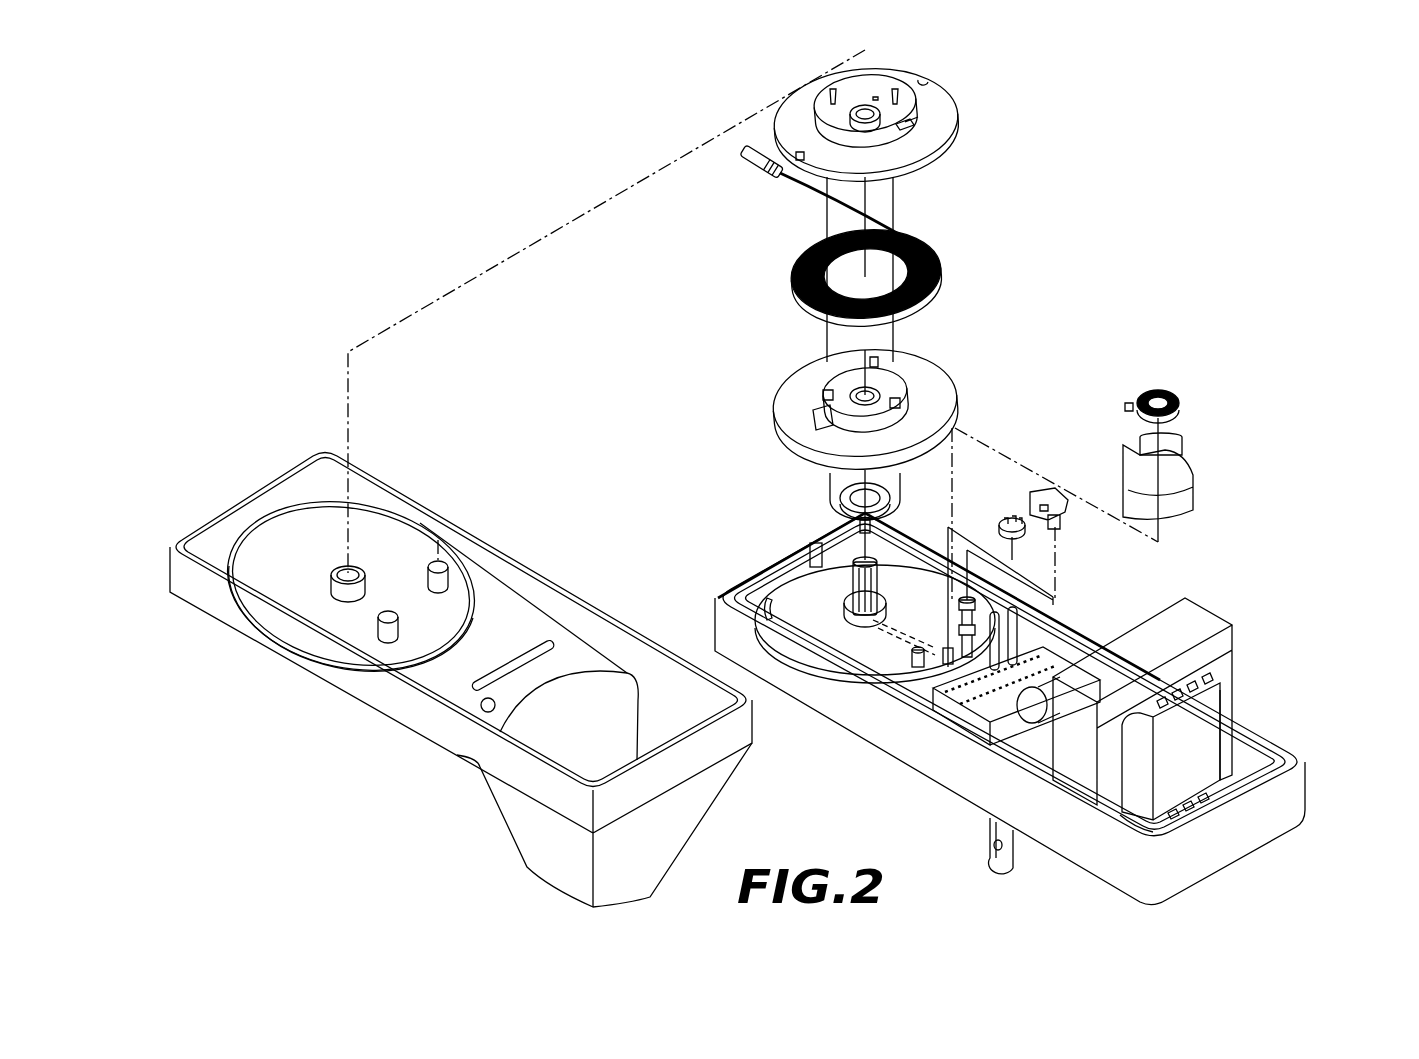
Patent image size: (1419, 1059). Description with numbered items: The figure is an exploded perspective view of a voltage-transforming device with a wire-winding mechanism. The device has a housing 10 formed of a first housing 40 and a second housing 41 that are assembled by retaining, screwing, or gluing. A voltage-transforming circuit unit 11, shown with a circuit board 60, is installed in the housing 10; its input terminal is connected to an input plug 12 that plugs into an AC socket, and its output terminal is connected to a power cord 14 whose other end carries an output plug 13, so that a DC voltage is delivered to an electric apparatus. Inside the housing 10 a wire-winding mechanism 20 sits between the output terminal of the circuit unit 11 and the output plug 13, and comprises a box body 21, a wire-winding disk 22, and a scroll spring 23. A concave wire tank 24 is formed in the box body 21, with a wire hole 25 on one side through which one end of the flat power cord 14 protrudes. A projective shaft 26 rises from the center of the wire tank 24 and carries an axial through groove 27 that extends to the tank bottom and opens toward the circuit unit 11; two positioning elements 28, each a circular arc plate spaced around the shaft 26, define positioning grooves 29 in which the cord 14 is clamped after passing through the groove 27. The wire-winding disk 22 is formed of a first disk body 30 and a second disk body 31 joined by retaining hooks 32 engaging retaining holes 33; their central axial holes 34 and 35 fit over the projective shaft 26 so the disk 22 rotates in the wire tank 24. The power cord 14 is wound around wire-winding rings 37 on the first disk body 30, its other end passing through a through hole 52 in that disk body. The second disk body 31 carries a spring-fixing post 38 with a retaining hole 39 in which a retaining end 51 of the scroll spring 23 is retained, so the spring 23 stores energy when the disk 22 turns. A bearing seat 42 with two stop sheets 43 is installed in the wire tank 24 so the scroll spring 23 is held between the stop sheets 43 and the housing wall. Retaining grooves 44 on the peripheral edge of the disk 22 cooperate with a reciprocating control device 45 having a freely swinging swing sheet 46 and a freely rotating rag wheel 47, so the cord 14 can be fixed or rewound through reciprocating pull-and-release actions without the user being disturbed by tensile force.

The housing 10 is at (1029, 693).
The voltage-transforming circuit unit 11 is at (1198, 620).
The input plug 12 is at (988, 863).
The output plug 13 is at (750, 157).
The power cord 14 is at (870, 221).
The wire-winding mechanism 20 is at (874, 115).
The box body 21 is at (895, 680).
The wire-winding disk 22 is at (872, 389).
The scroll spring 23 is at (1180, 376).
The wire tank 24 is at (815, 595).
The wire hole 25 is at (813, 545).
The projective shaft 26 is at (765, 614).
The through groove 27 is at (873, 562).
The positioning element 28 is at (858, 622).
The positioning groove 29 is at (845, 616).
The first disk body 30 is at (800, 378).
The second disk body 31 is at (795, 113).
The retaining hooks 32 is at (878, 362).
The retaining holes 33 is at (878, 95).
The central axial hole 34 is at (820, 395).
The central axial hole 35 is at (838, 100).
The wire-winding rings 37 is at (900, 403).
The spring-fixing post 38 is at (862, 145).
The retaining hole 39 is at (915, 127).
The first housing 40 is at (1075, 828).
The second housing 41 is at (470, 740).
The bearing seat 42 is at (1199, 478).
The stop sheets 43 is at (1175, 448).
The retaining grooves 44 is at (928, 84).
The reciprocating control device 45 is at (1068, 510).
The swing sheet 46 is at (1040, 490).
The rag wheel 47 is at (1012, 520).
The retaining end 51 is at (1133, 405).
The through hole 52 is at (815, 425).
The circuit board 60 is at (1240, 770).